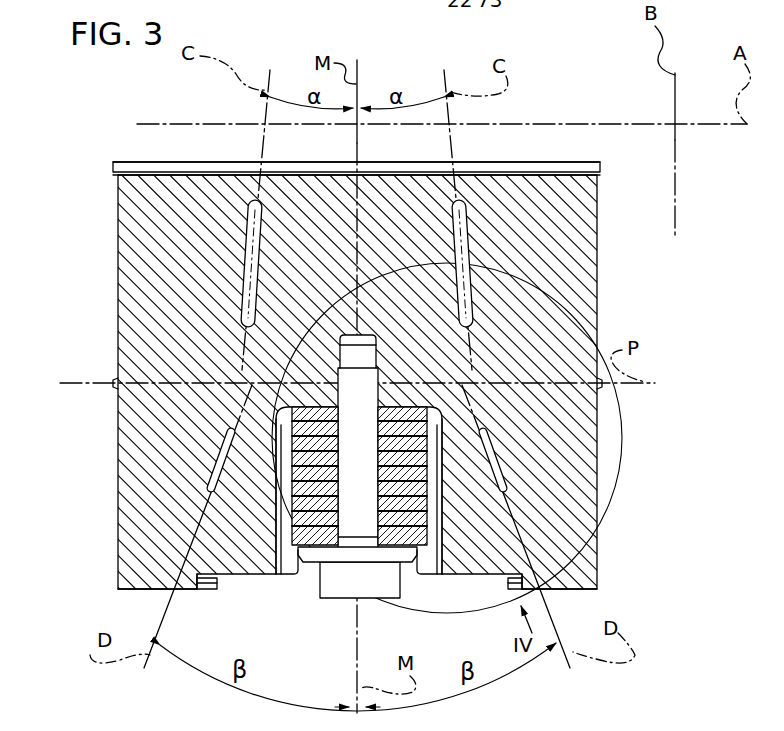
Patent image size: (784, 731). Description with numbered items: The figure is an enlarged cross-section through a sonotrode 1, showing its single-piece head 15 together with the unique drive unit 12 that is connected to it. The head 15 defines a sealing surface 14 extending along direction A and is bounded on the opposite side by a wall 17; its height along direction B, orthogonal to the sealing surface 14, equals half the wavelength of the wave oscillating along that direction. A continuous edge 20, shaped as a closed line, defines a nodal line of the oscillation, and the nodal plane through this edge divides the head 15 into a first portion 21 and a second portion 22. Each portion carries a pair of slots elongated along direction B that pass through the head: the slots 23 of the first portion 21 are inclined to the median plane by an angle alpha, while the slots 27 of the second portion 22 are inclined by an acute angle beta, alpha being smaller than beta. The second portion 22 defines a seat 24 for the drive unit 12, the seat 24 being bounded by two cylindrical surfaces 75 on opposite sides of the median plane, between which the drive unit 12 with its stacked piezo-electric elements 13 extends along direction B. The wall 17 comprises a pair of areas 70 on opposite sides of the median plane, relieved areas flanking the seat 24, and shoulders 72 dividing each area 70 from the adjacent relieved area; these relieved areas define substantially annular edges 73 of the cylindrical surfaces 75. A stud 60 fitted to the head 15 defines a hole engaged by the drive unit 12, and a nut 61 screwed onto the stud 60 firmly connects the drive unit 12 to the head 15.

The sonotrode 1 is at (60, 124).
The drive unit 12 is at (398, 441).
The piezo-electric elements 13 is at (434, 514).
The sealing surface 14 is at (567, 160).
The head 15 is at (128, 150).
The wall 17 is at (383, 0).
The continuous edge 20 is at (110, 384).
The first portion 21 is at (152, 218).
The second portion 22 is at (145, 466).
The slots 23 is at (457, 227).
The seat 24 is at (288, 582).
The slots 27 is at (492, 464).
The stud 60 is at (378, 582).
The nut 61 is at (343, 550).
The areas 70 is at (143, 593).
The shoulders 72 is at (216, 589).
The annular edges 73 is at (296, 505).
The cylindrical surfaces 75 is at (211, 584).